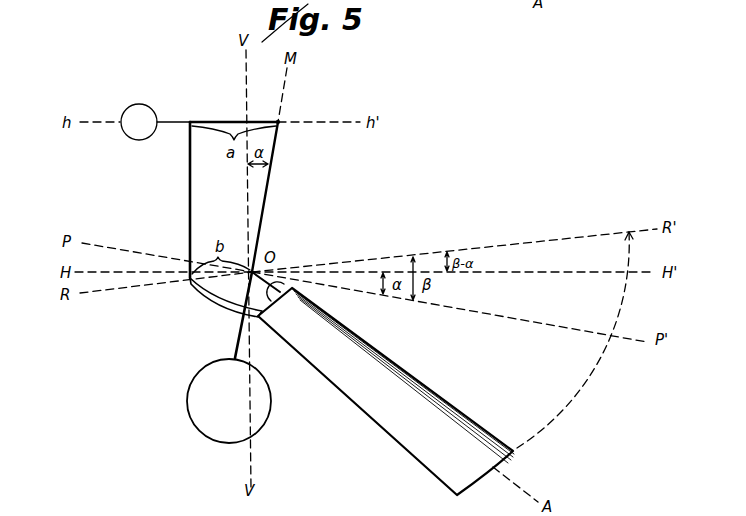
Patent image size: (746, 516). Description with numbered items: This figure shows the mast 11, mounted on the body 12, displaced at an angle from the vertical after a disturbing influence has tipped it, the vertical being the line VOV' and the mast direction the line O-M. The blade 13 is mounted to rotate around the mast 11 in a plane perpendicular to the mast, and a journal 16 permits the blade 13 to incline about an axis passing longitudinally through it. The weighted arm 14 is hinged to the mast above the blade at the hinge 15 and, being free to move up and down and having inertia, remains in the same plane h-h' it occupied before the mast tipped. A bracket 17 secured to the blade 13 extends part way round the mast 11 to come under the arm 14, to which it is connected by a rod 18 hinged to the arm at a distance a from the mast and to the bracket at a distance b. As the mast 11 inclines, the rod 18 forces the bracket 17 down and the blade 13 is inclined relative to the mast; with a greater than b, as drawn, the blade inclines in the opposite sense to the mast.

The mast 11 is at (238, 330).
The body 12 is at (203, 371).
The blade 13 is at (402, 364).
The weighted arm 14 is at (191, 121).
The hinge 15 is at (279, 122).
The journal 16 is at (289, 291).
The bracket 17 is at (206, 297).
The rod 18 is at (190, 178).